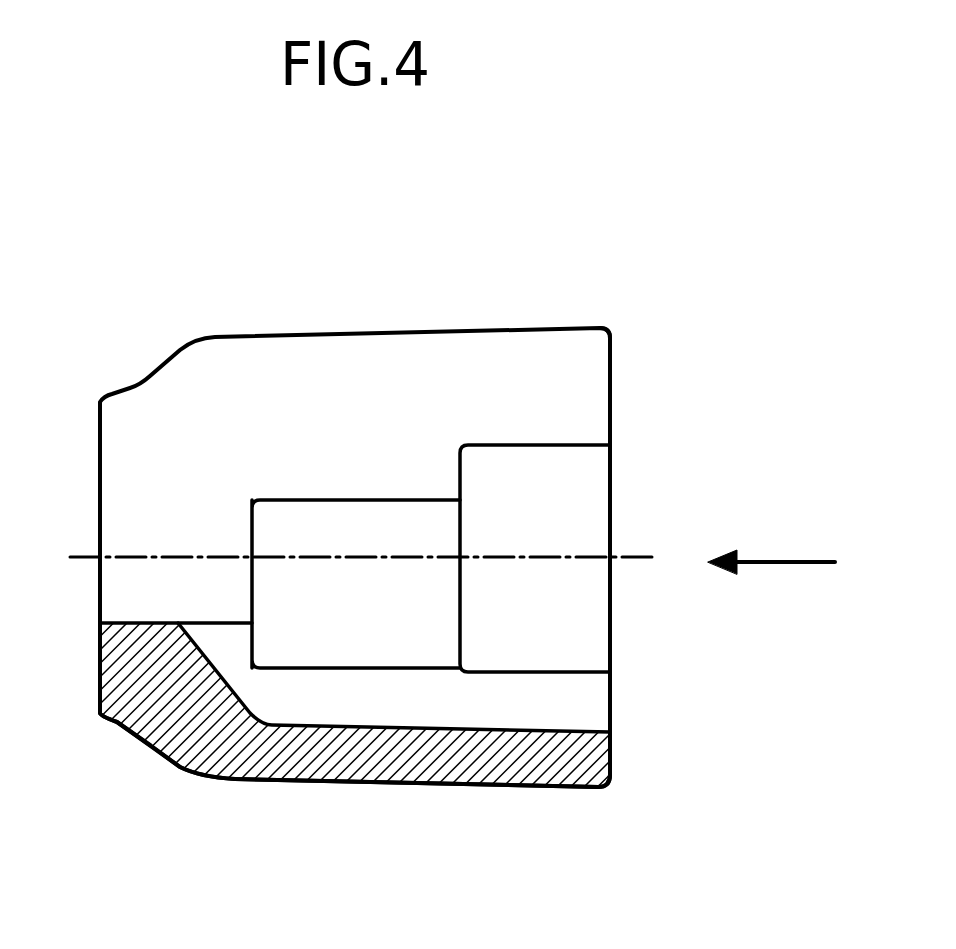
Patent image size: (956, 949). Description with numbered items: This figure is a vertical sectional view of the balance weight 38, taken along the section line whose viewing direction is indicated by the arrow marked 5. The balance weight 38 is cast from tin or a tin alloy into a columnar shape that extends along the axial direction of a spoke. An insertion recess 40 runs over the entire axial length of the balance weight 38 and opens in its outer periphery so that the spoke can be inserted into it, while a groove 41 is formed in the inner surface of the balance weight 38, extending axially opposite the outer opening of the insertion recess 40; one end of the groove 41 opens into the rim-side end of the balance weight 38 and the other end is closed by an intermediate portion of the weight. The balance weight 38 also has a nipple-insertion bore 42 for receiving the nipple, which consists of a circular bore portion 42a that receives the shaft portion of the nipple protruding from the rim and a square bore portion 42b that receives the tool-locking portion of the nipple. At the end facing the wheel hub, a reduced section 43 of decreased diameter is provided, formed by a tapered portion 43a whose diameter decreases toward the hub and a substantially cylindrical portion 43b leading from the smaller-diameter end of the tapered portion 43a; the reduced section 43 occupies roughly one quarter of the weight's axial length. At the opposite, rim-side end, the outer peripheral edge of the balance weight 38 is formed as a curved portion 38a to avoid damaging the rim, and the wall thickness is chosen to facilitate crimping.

The balance weight 38 is at (353, 775).
The curved portion 38a is at (610, 335).
The insertion recess 40 is at (438, 347).
The groove 41 is at (513, 728).
The nipple-insertion bore 42 is at (528, 504).
The circular bore portion 42a is at (535, 447).
The square bore portion 42b is at (377, 502).
The reduced section 43 is at (135, 831).
The tapered portion 43a is at (163, 753).
The substantially cylindrical portion 43b is at (108, 720).
The view direction of FIG. 5 is at (793, 567).